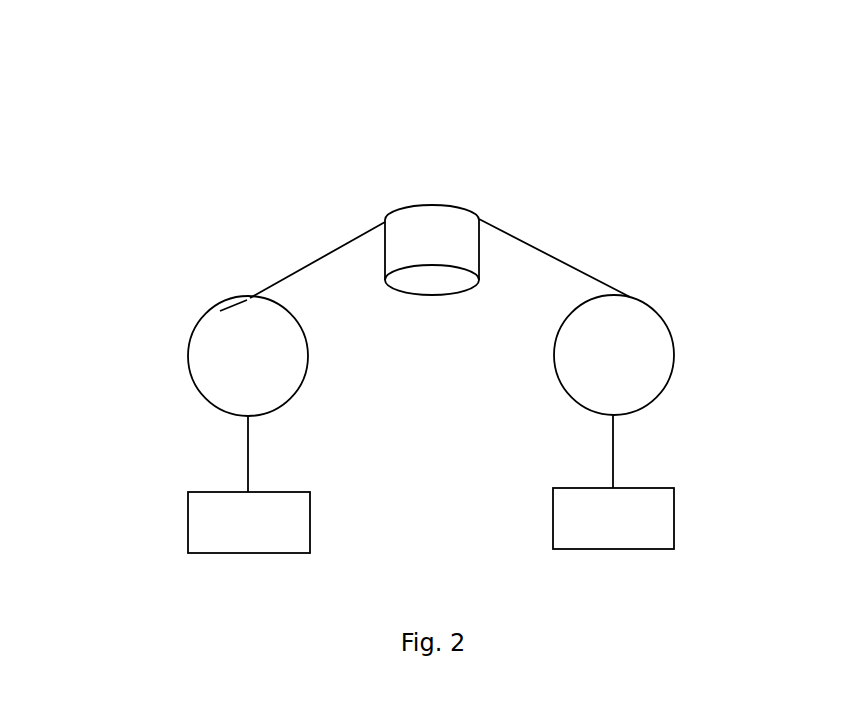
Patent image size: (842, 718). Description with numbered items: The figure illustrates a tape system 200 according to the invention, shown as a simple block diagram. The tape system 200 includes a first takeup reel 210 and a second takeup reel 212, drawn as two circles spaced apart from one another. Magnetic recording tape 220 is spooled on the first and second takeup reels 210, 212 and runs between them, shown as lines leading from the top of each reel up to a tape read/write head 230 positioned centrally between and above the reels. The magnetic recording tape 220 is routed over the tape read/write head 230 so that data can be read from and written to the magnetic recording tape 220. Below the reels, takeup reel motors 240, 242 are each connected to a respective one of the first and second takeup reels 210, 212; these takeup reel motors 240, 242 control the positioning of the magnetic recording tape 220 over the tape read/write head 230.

The tape system 200 is at (660, 115).
The first takeup reel 210 is at (190, 357).
The second takeup reel 212 is at (675, 337).
The magnetic recording tape 220 is at (510, 235).
The tape read/write head 230 is at (402, 281).
The takeup reel motor 240 is at (188, 508).
The takeup reel motor 242 is at (673, 518).